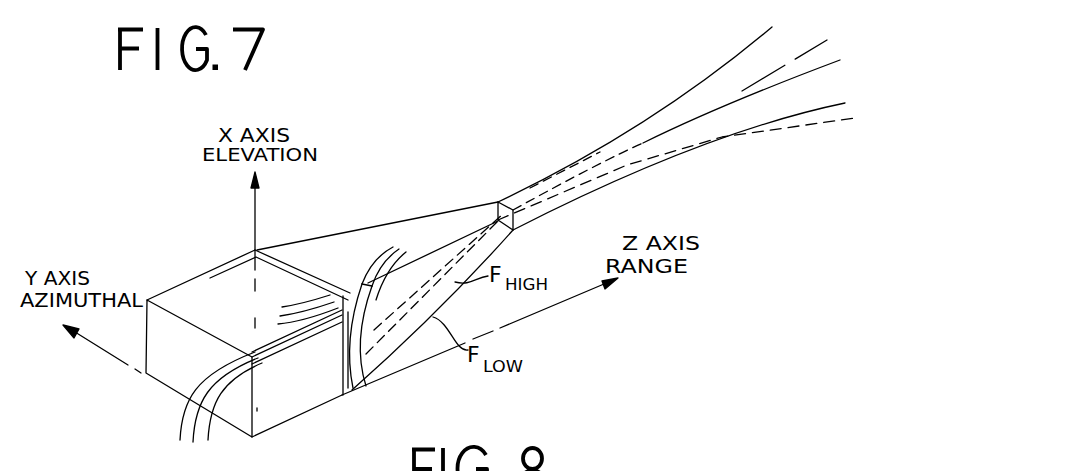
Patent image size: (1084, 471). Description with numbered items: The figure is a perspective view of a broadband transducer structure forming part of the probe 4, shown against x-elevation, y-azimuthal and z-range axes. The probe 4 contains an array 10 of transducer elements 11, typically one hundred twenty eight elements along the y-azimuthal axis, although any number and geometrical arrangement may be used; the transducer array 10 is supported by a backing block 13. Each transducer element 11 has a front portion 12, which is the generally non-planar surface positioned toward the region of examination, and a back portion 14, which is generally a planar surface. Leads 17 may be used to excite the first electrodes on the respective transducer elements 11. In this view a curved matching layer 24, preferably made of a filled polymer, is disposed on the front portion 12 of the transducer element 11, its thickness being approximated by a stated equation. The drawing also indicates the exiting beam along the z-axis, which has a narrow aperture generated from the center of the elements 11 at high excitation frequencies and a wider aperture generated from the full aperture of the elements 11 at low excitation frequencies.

The probe 4 is at (118, 196).
The transducer array 10 is at (237, 240).
The transducer element 11 is at (283, 306).
The front portion 12 is at (352, 394).
The backing block 13 is at (185, 283).
The back portion 14 is at (343, 378).
The leads 17 is at (225, 439).
The curved matching layer 24 is at (392, 264).